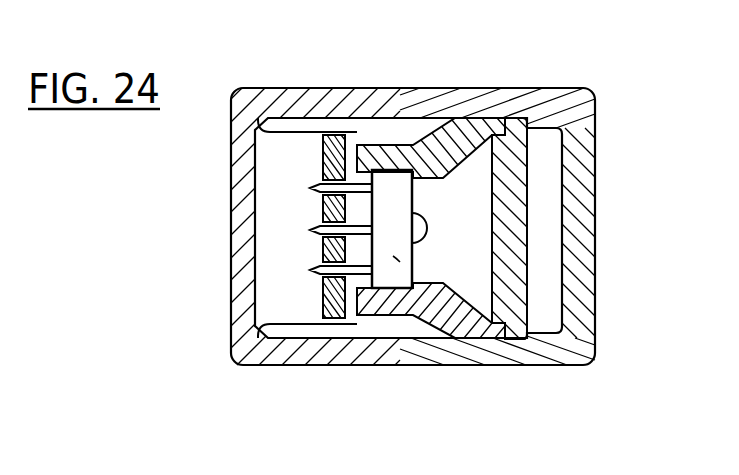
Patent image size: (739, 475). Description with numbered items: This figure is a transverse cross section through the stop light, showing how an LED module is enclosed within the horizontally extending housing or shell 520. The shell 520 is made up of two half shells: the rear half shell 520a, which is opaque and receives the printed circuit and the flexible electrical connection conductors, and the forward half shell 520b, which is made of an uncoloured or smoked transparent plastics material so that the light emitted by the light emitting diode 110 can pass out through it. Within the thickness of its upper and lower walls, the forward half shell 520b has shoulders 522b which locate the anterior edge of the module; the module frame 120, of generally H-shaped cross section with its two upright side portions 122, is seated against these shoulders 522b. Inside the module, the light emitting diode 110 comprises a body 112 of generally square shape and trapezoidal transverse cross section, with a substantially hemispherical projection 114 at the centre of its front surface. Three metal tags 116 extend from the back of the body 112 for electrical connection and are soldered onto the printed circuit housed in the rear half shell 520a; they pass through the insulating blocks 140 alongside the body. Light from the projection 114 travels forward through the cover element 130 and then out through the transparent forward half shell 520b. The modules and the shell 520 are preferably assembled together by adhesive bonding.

The housing or shell 520 is at (343, 56).
The rear half shell 520a is at (247, 306).
The forward half shell 520b is at (508, 348).
The shoulders 522b is at (518, 122).
The cover element 130 is at (520, 248).
The upright side portions 122 is at (453, 128).
The frame 120 is at (446, 328).
The light emitting diode 110 is at (420, 193).
The body 112 is at (400, 262).
The projection 114 is at (426, 230).
The metal tags 116 is at (312, 229).
The insulator blocks 140 is at (323, 296).